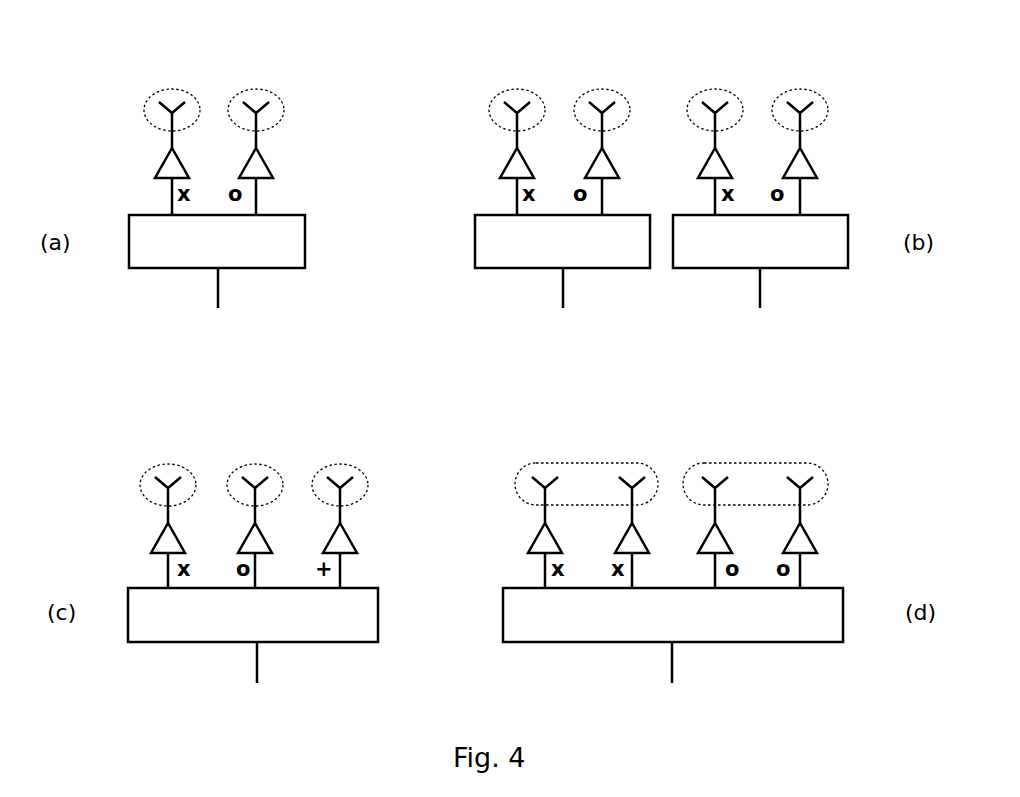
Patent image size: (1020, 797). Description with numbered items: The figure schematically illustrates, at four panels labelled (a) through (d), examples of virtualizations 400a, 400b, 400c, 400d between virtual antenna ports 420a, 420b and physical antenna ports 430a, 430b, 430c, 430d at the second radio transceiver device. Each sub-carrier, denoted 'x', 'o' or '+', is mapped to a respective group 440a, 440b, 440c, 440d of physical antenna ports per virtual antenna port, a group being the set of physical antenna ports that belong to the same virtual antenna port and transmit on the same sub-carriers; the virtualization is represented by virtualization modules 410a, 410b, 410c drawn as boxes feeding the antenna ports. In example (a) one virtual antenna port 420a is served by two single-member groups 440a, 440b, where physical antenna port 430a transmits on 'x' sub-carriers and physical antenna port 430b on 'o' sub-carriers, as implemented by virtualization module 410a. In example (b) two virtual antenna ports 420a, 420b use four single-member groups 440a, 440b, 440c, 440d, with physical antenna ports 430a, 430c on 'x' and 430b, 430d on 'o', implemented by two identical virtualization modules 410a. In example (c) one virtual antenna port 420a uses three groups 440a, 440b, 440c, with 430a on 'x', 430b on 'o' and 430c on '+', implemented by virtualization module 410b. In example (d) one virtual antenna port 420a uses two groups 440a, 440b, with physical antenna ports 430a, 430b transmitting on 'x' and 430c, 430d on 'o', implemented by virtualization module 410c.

The virtualization 400a is at (132, 99).
The virtualization 400b is at (848, 98).
The virtualization 400c is at (132, 470).
The virtualization 400d is at (847, 476).
The virtualization module 410a is at (277, 262).
The virtualization module 410b is at (310, 637).
The virtualization module 410c is at (777, 635).
The virtual antenna port 420a is at (217, 297).
The virtual antenna port 420b is at (758, 295).
The physical antenna port 430a is at (156, 103).
The physical antenna port 430b is at (241, 103).
The physical antenna port 430c is at (703, 106).
The physical antenna port 430d is at (788, 106).
The group of physical antenna ports 440a is at (143, 120).
The group of physical antenna ports 440b is at (282, 120).
The group of physical antenna ports 440c is at (693, 122).
The group of physical antenna ports 440d is at (822, 120).